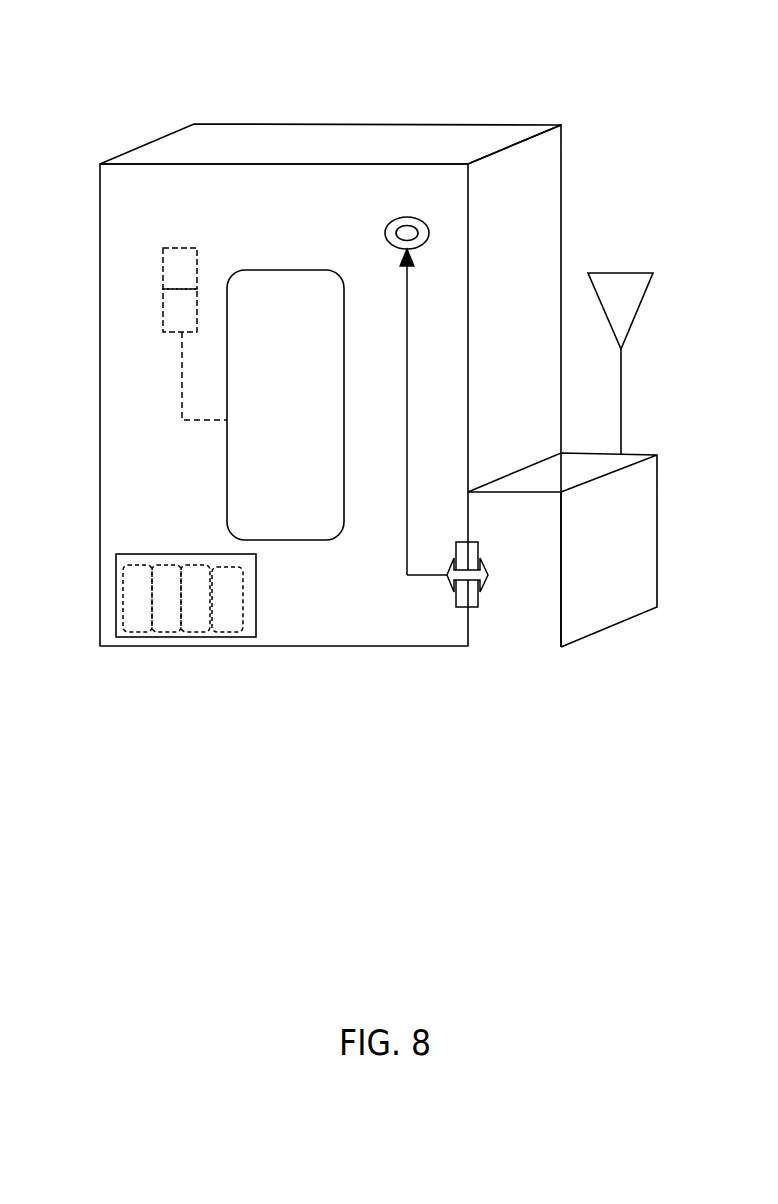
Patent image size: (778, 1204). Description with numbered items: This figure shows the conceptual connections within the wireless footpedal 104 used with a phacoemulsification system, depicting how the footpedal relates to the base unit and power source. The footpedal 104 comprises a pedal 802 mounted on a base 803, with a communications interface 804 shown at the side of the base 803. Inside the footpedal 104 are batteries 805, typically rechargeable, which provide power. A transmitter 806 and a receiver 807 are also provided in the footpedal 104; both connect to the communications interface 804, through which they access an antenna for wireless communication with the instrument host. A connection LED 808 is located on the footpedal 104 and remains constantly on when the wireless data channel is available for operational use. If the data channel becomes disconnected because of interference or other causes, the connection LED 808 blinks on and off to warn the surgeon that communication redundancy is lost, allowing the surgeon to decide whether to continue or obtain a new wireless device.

The wireless footpedal 104 is at (158, 85).
The pedal 802 is at (285, 405).
The base 803 is at (330, 144).
The communications interface 804 is at (532, 460).
The batteries 805 is at (186, 584).
The transmitter 806 is at (163, 268).
The receiver 807 is at (175, 354).
The connection LED 808 is at (411, 383).